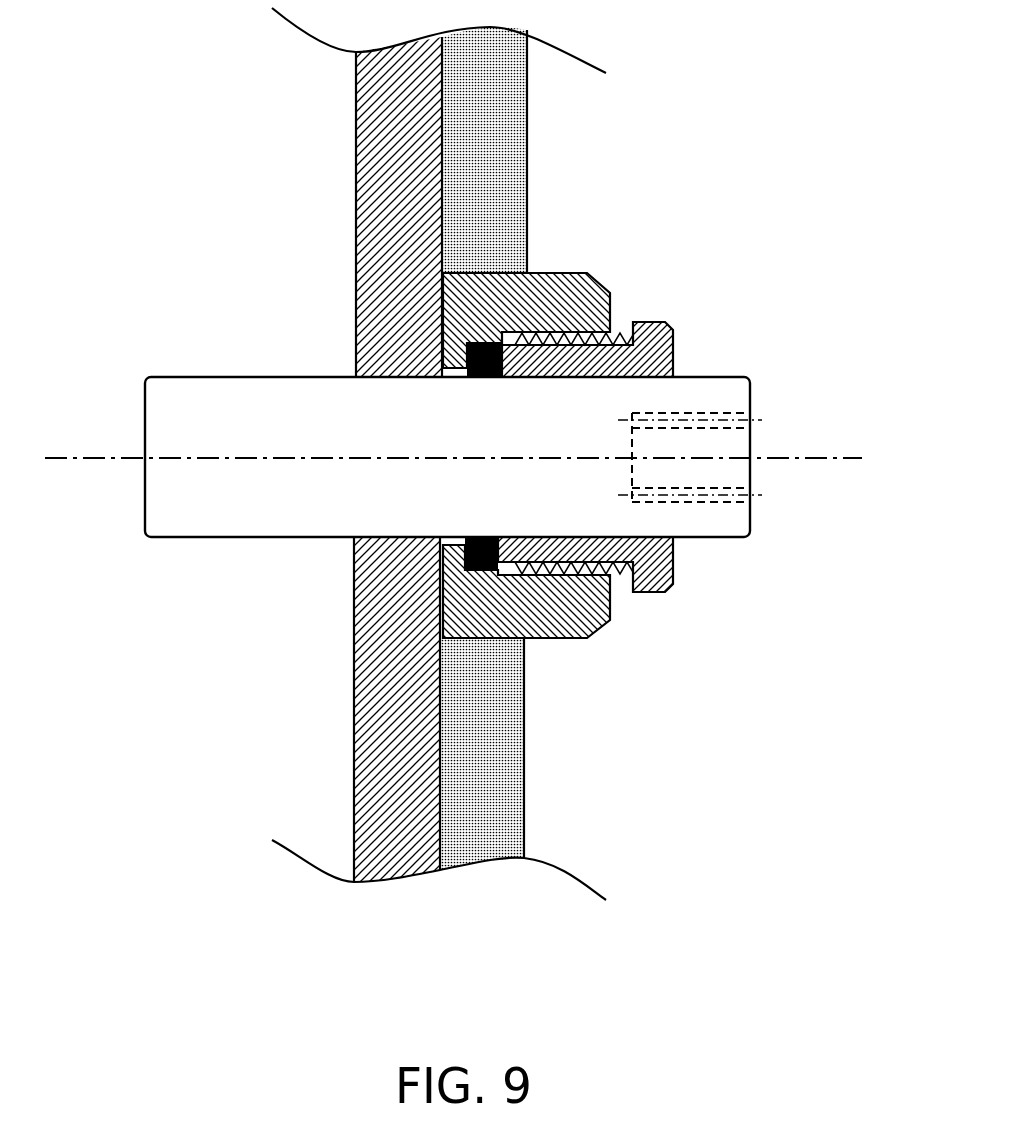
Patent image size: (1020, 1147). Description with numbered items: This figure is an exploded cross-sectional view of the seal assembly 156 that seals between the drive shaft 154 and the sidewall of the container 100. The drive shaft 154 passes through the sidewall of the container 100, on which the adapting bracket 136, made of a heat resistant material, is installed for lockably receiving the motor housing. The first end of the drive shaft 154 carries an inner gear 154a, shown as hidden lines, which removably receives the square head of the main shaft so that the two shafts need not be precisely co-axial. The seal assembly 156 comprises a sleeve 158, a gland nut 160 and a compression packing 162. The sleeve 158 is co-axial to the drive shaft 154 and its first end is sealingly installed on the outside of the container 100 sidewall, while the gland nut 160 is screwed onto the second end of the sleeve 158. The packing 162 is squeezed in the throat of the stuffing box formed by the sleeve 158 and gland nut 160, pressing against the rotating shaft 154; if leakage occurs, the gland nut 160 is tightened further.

The container 100 is at (378, 272).
The adapting bracket 136 is at (478, 204).
The drive shaft 154 is at (247, 433).
The inner gear 154a is at (708, 450).
The seal assembly 156 is at (675, 638).
The sleeve 158 is at (575, 300).
The gland nut 160 is at (640, 357).
The compression packing 162 is at (465, 540).